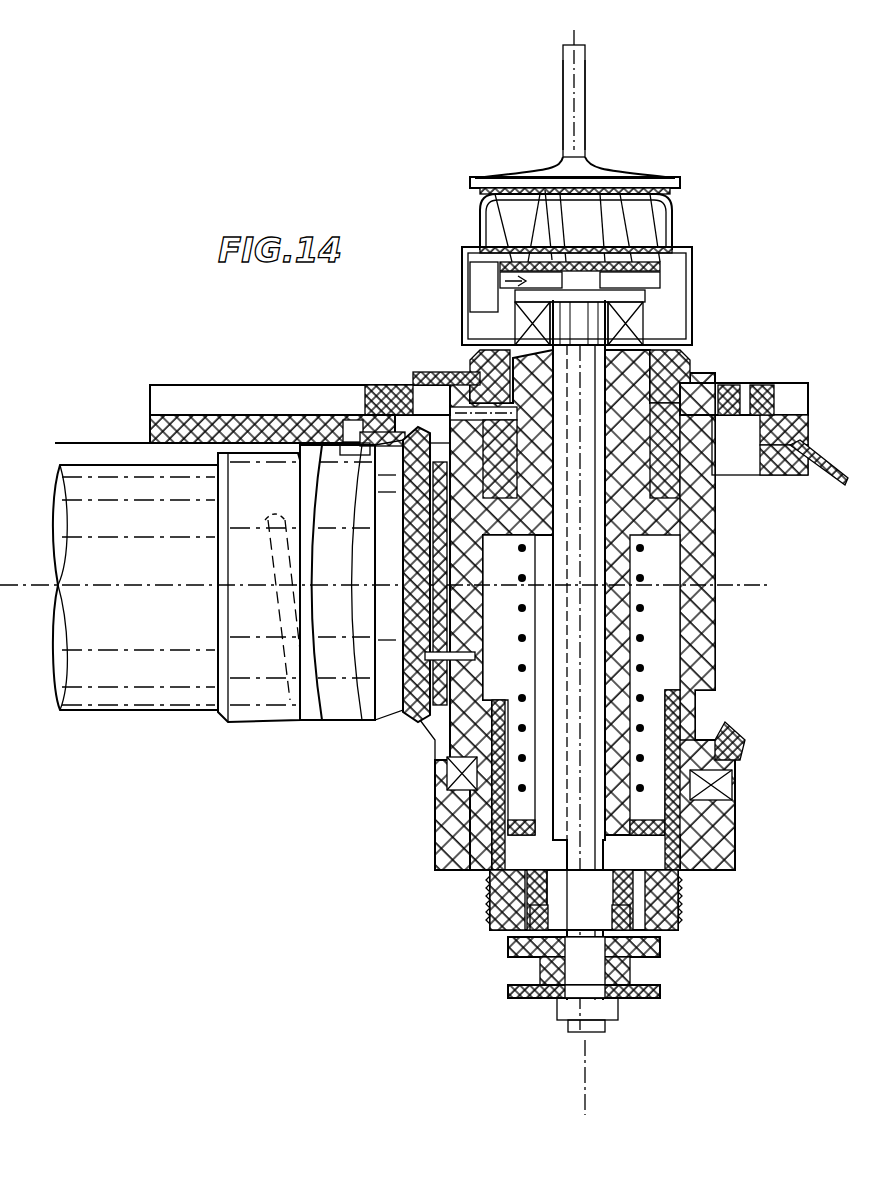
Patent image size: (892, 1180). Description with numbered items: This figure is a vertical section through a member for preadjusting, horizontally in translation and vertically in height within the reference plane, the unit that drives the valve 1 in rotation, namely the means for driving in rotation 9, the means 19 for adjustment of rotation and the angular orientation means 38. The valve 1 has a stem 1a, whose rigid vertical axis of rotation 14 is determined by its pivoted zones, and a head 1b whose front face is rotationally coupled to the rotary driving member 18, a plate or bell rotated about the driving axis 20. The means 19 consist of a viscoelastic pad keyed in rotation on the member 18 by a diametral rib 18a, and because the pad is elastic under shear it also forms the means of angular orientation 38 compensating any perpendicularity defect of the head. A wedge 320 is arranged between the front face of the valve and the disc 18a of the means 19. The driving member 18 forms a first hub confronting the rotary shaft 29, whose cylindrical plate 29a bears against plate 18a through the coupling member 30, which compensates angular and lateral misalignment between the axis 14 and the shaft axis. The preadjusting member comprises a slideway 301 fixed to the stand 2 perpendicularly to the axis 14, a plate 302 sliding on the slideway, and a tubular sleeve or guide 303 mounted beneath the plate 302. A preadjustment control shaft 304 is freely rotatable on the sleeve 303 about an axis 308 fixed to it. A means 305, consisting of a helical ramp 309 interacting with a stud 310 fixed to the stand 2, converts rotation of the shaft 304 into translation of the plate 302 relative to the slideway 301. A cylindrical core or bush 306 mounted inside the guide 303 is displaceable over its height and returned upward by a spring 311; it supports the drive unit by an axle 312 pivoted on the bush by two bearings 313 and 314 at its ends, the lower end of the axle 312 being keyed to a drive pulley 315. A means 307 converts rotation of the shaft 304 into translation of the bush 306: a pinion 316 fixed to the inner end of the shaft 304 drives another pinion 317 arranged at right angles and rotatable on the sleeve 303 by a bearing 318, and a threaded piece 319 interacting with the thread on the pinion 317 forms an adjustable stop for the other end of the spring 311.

The valve 1 is at (581, 730).
The stem 1a is at (585, 85).
The head 1b is at (598, 168).
The stand 2 is at (810, 448).
The means for driving in rotation 9 is at (478, 250).
The rigid vertical axis of the valve stem 14 is at (578, 30).
The rotary driving member 18 is at (545, 188).
The diametral rib / cylindrical plate of first hub 18a is at (672, 212).
The means for adjustment of rotation 19 is at (500, 180).
The driving axis of rotation 20 is at (563, 46).
The rotary shaft 29 is at (470, 318).
The cylindrical plate of rotary hub 29a is at (660, 290).
The coupling member 30 is at (498, 281).
The means of angular orientation 38 is at (655, 178).
The slideway 301 is at (342, 385).
The plate 302 is at (385, 385).
The tubular sleeve or guide 303 is at (700, 580).
The preadjustment control shaft 304 is at (110, 690).
The means converting rotation of shaft into translation of plate 305 is at (300, 700).
The cylindrical core or bush 306 is at (660, 525).
The means converting rotation of shaft into translation of bush 307 is at (448, 745).
The axis of the control shaft 308 is at (350, 700).
The helical ramp 309 is at (345, 515).
The stud 310 is at (330, 415).
The spring 311 is at (645, 658).
The axle 312 is at (445, 835).
The bearing 313 is at (655, 330).
The bearing 314 is at (650, 952).
The drive pulley 315 is at (545, 965).
The pinion 316 is at (415, 730).
The pinion 317 is at (745, 745).
The bearing 318 is at (710, 790).
The threaded piece 319 is at (510, 898).
The wedge 320 is at (672, 236).